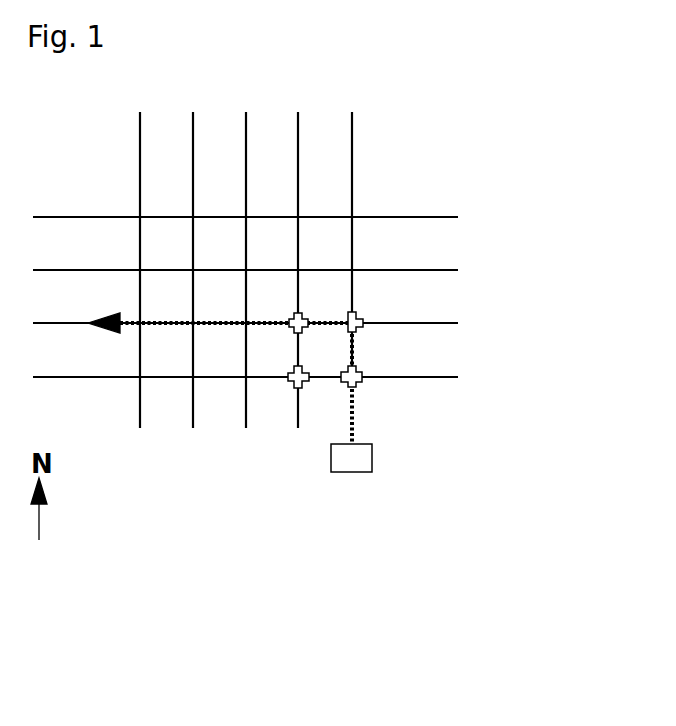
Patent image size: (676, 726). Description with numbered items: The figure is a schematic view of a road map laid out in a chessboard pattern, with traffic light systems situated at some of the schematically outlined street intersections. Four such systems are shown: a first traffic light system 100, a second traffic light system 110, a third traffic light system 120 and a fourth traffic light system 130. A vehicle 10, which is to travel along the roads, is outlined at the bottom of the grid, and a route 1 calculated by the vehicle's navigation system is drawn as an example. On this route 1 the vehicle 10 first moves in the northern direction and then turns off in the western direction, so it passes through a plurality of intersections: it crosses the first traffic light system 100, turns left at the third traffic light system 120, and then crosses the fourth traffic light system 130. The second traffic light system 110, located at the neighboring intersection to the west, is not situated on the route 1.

The route 1 is at (115, 343).
The vehicle 10 is at (351, 398).
The first traffic light system 100 is at (360, 396).
The second traffic light system 110 is at (298, 398).
The third traffic light system 120 is at (376, 323).
The fourth traffic light system 130 is at (316, 312).